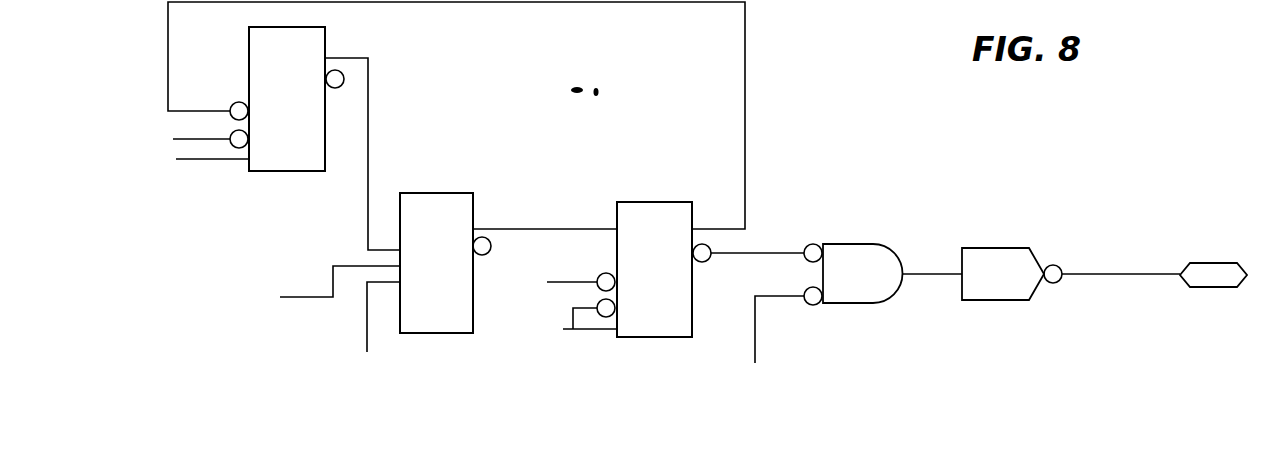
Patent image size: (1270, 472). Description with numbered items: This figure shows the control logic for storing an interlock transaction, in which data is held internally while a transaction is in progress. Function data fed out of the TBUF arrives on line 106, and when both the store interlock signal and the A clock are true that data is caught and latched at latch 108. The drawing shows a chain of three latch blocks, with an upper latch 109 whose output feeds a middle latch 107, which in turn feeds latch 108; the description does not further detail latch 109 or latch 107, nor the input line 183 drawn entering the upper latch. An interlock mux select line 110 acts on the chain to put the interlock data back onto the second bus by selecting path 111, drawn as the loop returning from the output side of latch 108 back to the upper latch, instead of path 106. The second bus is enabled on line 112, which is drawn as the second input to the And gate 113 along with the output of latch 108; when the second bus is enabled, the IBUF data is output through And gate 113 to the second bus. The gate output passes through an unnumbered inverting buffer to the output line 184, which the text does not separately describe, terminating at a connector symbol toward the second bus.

The latch 109 is at (253, 52).
The input line 183 is at (182, 138).
The path 111 is at (747, 137).
The latch 107 is at (450, 195).
The line 106 is at (333, 285).
The interlock mux select line 110 is at (367, 330).
The latch 108 is at (656, 215).
The line 112 is at (757, 343).
The And gate 113 is at (848, 252).
The output line 184 is at (1125, 275).